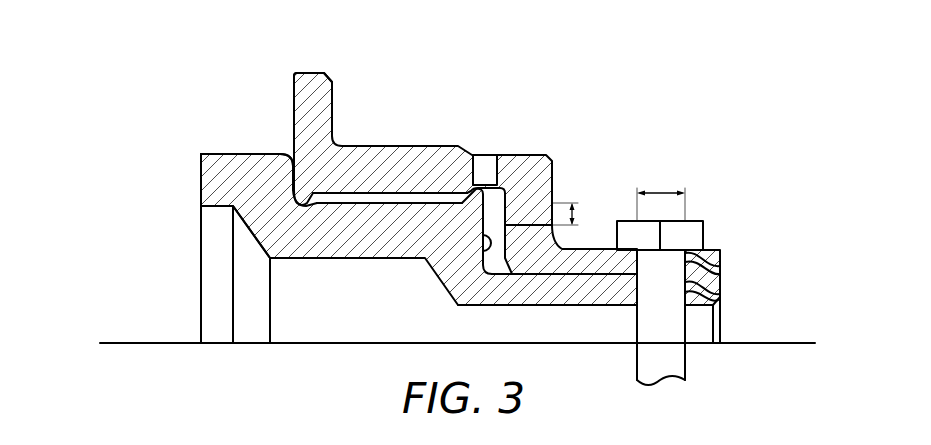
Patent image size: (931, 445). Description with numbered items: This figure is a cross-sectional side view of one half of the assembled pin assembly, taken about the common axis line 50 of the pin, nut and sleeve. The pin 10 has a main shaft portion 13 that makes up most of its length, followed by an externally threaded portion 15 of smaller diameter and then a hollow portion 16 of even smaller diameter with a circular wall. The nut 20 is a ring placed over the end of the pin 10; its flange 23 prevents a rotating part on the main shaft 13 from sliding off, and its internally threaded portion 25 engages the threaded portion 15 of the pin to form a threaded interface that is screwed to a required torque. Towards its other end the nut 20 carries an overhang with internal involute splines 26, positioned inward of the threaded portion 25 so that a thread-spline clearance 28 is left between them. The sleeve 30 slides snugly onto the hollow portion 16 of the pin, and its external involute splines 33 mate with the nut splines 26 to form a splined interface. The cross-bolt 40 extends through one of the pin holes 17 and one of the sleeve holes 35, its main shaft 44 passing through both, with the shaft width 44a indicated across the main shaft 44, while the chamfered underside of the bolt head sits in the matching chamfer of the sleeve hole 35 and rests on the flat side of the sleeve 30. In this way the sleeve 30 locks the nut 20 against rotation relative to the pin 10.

The pin 10 is at (218, 150).
The main shaft portion 13 is at (207, 185).
The externally threaded portion 15 is at (395, 227).
The hollow portion 16 is at (556, 300).
The holes 17 is at (722, 287).
The nut 20 is at (369, 143).
The flange 23 is at (312, 78).
The internally threaded portion 25 is at (395, 187).
The internal involute splines 26 is at (542, 224).
The thread-spline clearance 28 is at (578, 212).
The sleeve 30 is at (609, 278).
The external involute splines 33 is at (540, 250).
The chamfered hole 35 is at (722, 258).
The cross-bolt 40 is at (704, 218).
The main shaft 44 is at (687, 365).
The shank diameter 44a is at (661, 186).
The axis line 50 is at (790, 343).